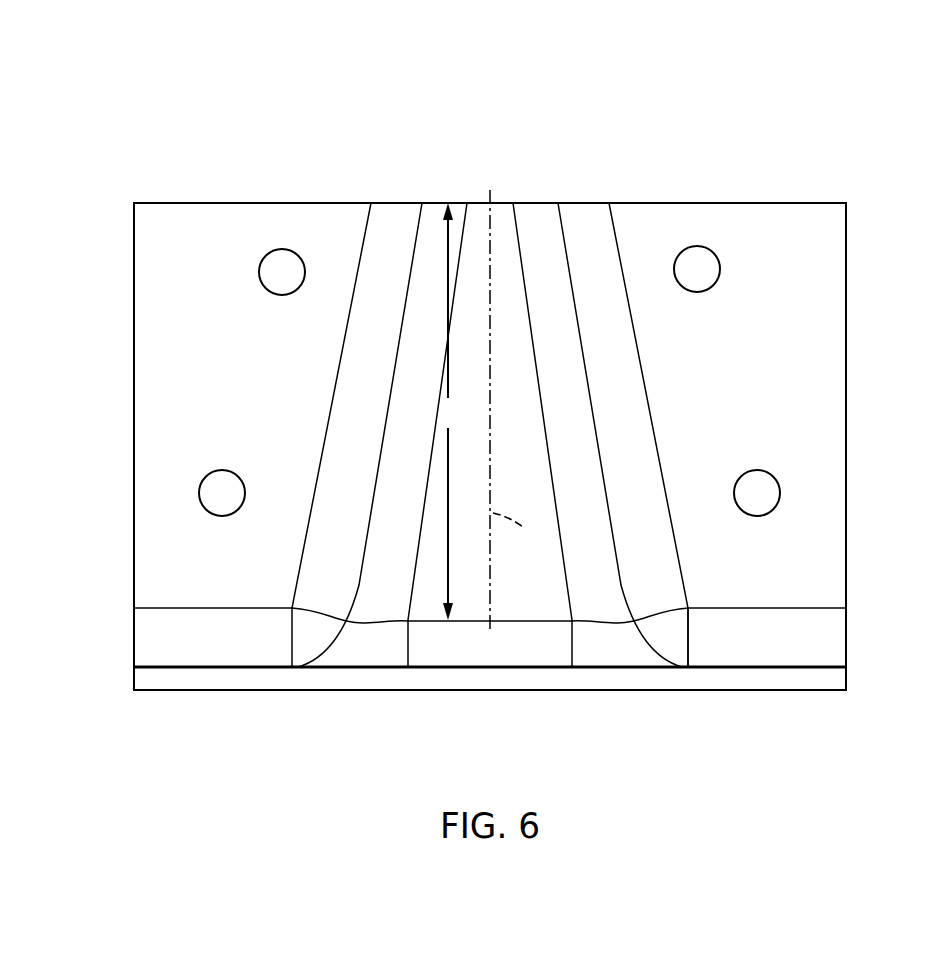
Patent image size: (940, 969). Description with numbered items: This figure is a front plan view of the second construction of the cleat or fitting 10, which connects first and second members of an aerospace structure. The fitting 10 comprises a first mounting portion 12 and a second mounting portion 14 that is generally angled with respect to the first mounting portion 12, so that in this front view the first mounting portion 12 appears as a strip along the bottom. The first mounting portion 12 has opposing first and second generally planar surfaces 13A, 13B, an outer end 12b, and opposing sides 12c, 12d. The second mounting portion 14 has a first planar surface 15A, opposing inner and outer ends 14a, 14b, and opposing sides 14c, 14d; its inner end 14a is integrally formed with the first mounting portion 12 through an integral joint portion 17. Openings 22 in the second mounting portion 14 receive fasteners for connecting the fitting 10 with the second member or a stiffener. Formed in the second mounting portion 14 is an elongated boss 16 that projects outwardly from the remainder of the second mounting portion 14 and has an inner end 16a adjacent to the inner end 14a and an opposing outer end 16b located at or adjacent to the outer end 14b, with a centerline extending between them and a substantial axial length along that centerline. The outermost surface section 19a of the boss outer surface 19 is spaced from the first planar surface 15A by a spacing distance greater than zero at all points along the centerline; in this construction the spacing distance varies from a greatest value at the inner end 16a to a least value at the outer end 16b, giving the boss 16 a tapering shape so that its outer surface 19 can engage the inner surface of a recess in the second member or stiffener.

The fitting 10 is at (200, 149).
The first mounting portion 12 is at (264, 706).
The outer end of first mounting portion 12b is at (616, 690).
The side of first mounting portion 12c is at (848, 673).
The side of first mounting portion 12d is at (133, 668).
The first planar surface of first mounting portion 13A is at (180, 667).
The second planar surface of first mounting portion 13B is at (764, 690).
The second mounting portion 14 is at (804, 189).
The inner end of second mounting portion 14a is at (806, 608).
The outer end of second mounting portion 14b is at (681, 203).
The side of second mounting portion 14c is at (848, 333).
The side of second mounting portion 14d is at (132, 368).
The first planar surface of second mounting portion 15A is at (836, 286).
The elongated boss 16 is at (340, 357).
The inner end of boss 16a is at (527, 620).
The outer end of boss 16b is at (538, 203).
The integral joint portion 17 is at (836, 631).
The outer surface of boss 19 is at (590, 465).
The outermost surface section of boss 19a is at (497, 315).
The opening in second mounting portion 22 is at (716, 254).